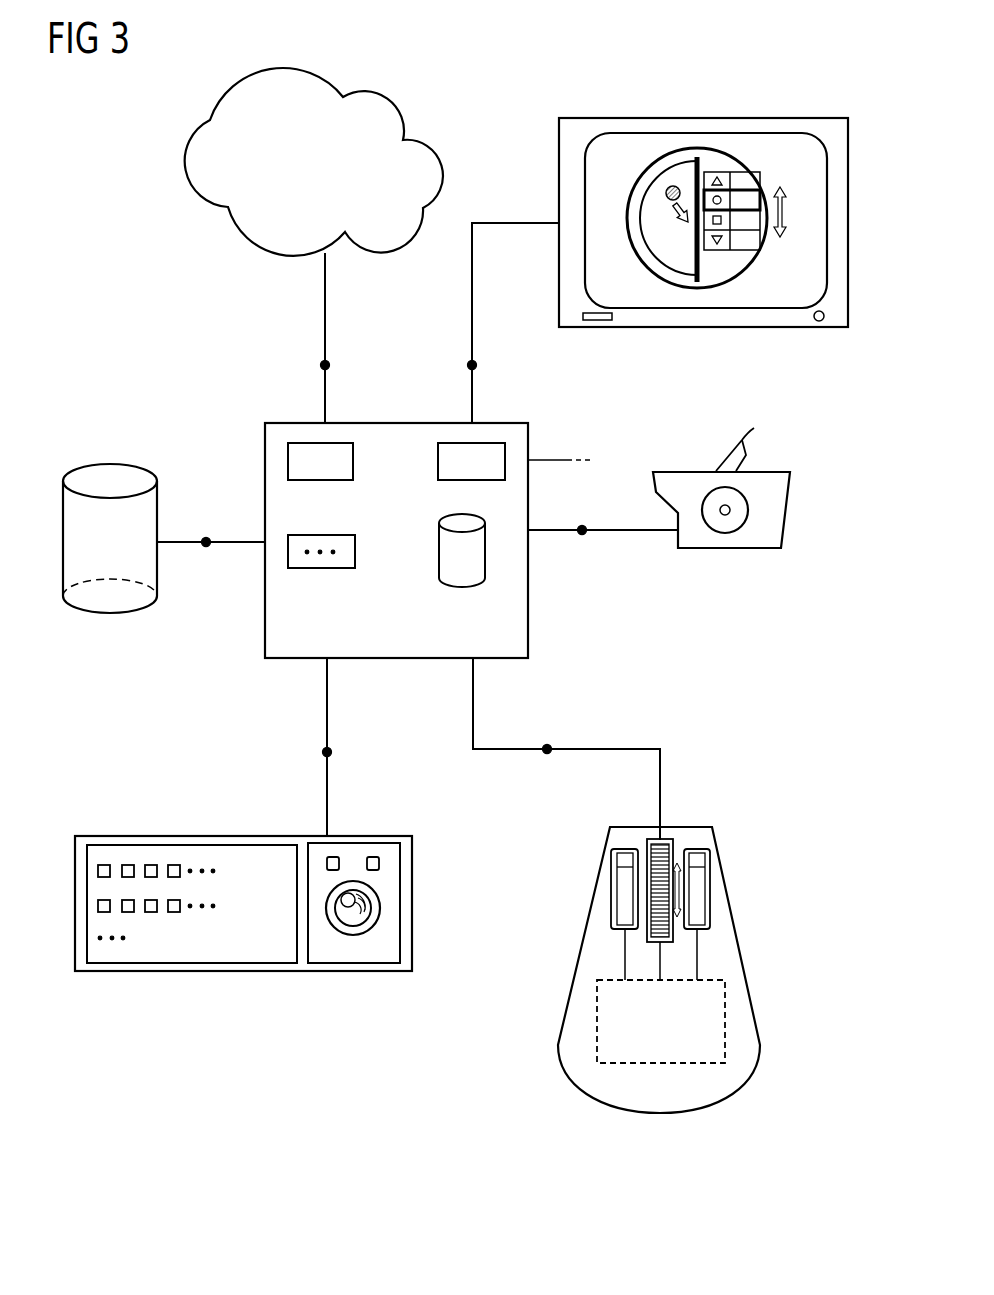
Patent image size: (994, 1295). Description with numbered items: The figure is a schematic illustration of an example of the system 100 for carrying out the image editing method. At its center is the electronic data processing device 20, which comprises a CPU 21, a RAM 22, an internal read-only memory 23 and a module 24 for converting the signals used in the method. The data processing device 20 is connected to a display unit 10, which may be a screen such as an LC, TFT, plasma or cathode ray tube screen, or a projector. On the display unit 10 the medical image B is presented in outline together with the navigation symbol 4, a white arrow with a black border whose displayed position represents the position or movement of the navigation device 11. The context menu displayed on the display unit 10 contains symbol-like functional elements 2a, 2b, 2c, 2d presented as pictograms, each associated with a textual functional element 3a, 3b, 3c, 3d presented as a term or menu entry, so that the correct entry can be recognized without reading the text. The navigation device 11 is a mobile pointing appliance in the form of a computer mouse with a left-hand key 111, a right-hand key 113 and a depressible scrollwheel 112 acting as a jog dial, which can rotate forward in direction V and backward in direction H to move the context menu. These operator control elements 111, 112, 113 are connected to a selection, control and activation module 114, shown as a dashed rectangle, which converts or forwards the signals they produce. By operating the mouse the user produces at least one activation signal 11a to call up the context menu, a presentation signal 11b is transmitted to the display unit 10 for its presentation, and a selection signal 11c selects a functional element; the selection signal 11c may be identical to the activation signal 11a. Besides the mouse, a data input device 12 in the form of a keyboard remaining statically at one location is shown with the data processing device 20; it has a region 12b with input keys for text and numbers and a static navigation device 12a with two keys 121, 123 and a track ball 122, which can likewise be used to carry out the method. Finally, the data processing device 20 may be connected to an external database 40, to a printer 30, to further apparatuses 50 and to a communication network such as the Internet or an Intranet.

The system 100 is at (512, 78).
The display unit 10 is at (805, 118).
The medical image B is at (636, 133).
The symbol-like functional element 2a is at (712, 178).
The symbol-like functional element 2b is at (718, 197).
The symbol-like functional element 2c is at (721, 226).
The symbol-like functional element 2d is at (717, 246).
The textual functional element 3a is at (748, 180).
The textual functional element 3b is at (752, 200).
The textual functional element 3c is at (752, 220).
The textual functional element 3d is at (752, 240).
The navigation symbol 4 is at (678, 216).
The navigation device 11 is at (206, 537).
The activation signal 11a is at (322, 752).
The presentation signal 11b is at (477, 365).
The selection signal 11c is at (548, 745).
The electronic data processing device 20 is at (397, 660).
The CPU 21 is at (353, 462).
The RAM 22 is at (490, 480).
The internal read-only memory 23 is at (439, 555).
The module for converting signals 24 is at (322, 568).
The printer 30 is at (731, 548).
The external database 40 is at (110, 478).
The further apparatuses 50 is at (575, 460).
The data input device 12 is at (167, 972).
The static navigation device 12a is at (400, 940).
The region with input keys 12b is at (225, 963).
The key 121 is at (333, 857).
The track ball 122 is at (380, 905).
The key 123 is at (373, 857).
The left-hand key 111 is at (623, 900).
The depressible scrollwheel 112 is at (653, 945).
The right-hand key 113 is at (701, 893).
The selection, control and activation module 114 is at (725, 997).